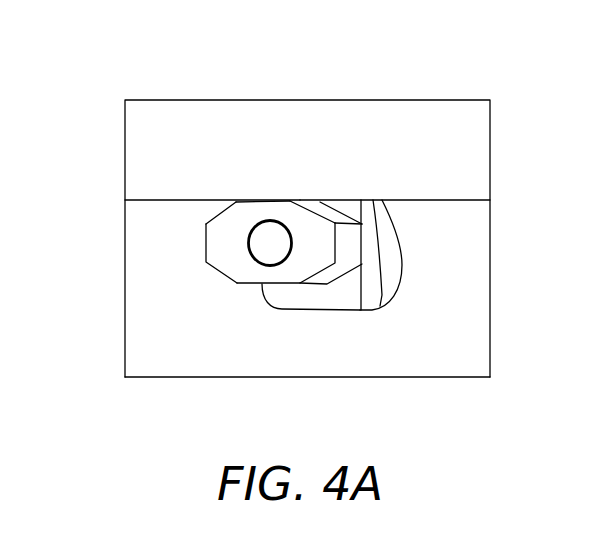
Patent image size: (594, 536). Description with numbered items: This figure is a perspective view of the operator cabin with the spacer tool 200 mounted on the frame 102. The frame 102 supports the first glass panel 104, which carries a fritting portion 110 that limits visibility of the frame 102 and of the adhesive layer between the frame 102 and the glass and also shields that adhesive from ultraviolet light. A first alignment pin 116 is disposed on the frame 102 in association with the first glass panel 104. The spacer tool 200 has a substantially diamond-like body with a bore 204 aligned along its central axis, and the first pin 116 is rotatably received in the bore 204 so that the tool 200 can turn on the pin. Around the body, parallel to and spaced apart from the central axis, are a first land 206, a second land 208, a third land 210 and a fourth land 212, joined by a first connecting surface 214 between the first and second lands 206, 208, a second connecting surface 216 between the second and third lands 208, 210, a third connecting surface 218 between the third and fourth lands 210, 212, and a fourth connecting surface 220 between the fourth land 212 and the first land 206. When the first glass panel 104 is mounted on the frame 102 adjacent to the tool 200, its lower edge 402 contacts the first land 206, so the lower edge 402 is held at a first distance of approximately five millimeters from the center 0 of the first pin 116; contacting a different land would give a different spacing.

The first glass panel 104 is at (473, 110).
The fritting portion 110 is at (470, 168).
The lower edge 402 is at (457, 202).
The frame 102 is at (295, 368).
The first alignment pin 116 is at (258, 240).
The spacer tool 200 is at (200, 287).
The first connecting surface 214 is at (228, 219).
The bore 204 is at (296, 222).
The fourth connecting surface 220 is at (320, 208).
The second land 208 is at (206, 246).
The second connecting surface 216 is at (235, 284).
The first land 206 is at (270, 221).
The center 0 is at (270, 240).
The fourth land 212 is at (331, 256).
The third connecting surface 218 is at (337, 278).
The third land 210 is at (262, 284).